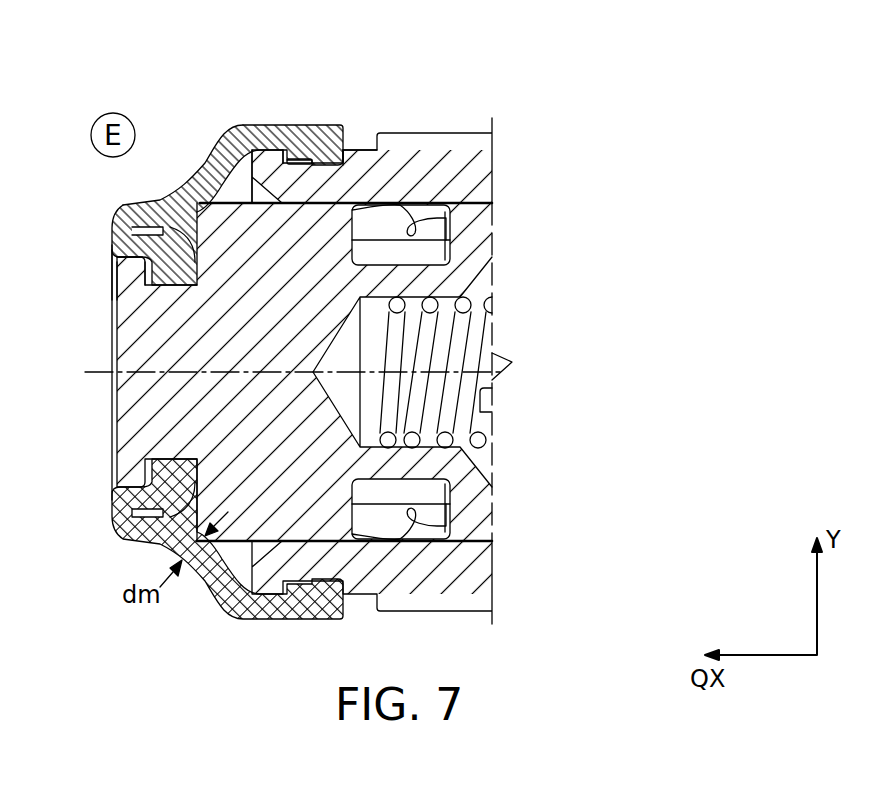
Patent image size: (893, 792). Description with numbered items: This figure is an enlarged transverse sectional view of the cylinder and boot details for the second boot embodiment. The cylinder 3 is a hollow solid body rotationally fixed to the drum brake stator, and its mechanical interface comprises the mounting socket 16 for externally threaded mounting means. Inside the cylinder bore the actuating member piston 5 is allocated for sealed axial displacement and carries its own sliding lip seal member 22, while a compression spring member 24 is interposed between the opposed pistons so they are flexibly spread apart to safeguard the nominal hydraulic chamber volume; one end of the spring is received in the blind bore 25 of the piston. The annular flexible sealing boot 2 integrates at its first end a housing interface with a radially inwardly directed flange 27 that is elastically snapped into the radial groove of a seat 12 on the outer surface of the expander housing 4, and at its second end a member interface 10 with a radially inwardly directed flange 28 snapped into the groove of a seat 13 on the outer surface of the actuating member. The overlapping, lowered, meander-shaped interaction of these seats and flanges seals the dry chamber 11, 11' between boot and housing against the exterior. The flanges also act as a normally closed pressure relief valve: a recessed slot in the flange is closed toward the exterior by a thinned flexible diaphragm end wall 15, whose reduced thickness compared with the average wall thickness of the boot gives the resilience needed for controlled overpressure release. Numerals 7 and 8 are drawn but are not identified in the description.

The sealing boot 2 is at (181, 167).
The cylinder 3 is at (338, 127).
The expander housing 4 is at (412, 586).
The actuating member (piston) 5 is at (257, 247).
The spring wire clip 7 is at (447, 213).
The membrane outer surface 8 is at (161, 198).
The member interface 10 is at (173, 287).
The dry chamber 11 is at (227, 181).
The dry chamber 11' is at (116, 232).
The seat 12 is at (300, 170).
The seat 13 is at (157, 288).
The diaphragm/end wall 15 is at (347, 200).
The mounting socket 16 is at (300, 160).
The sliding lip seal member 22 is at (377, 220).
The compression spring member 24 is at (463, 320).
The blind bore 25 is at (492, 407).
The flange 27 is at (265, 133).
The flange 28 is at (187, 265).